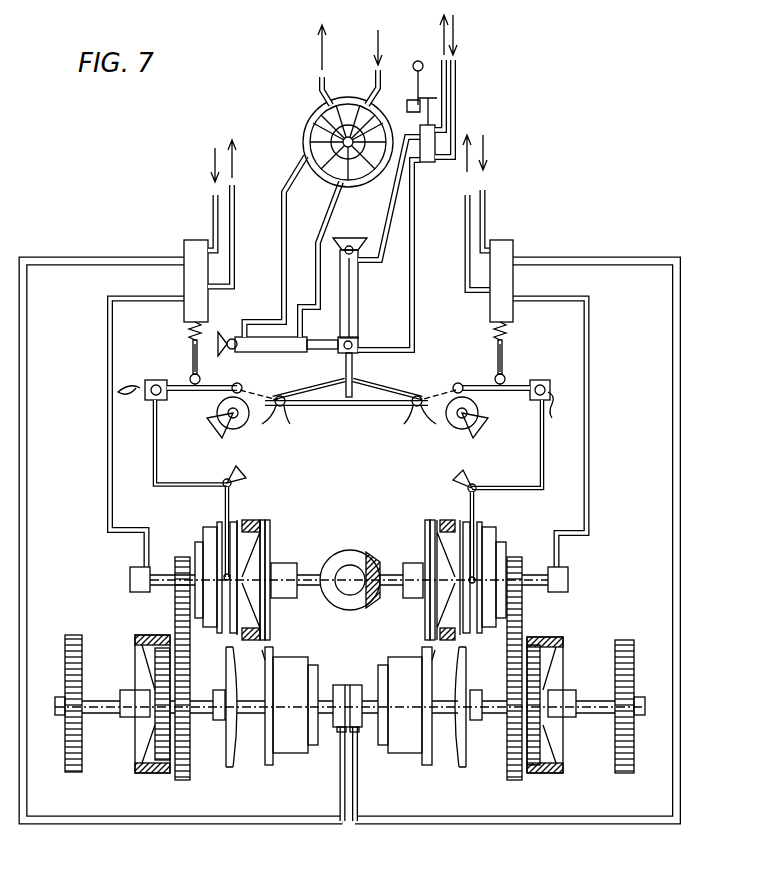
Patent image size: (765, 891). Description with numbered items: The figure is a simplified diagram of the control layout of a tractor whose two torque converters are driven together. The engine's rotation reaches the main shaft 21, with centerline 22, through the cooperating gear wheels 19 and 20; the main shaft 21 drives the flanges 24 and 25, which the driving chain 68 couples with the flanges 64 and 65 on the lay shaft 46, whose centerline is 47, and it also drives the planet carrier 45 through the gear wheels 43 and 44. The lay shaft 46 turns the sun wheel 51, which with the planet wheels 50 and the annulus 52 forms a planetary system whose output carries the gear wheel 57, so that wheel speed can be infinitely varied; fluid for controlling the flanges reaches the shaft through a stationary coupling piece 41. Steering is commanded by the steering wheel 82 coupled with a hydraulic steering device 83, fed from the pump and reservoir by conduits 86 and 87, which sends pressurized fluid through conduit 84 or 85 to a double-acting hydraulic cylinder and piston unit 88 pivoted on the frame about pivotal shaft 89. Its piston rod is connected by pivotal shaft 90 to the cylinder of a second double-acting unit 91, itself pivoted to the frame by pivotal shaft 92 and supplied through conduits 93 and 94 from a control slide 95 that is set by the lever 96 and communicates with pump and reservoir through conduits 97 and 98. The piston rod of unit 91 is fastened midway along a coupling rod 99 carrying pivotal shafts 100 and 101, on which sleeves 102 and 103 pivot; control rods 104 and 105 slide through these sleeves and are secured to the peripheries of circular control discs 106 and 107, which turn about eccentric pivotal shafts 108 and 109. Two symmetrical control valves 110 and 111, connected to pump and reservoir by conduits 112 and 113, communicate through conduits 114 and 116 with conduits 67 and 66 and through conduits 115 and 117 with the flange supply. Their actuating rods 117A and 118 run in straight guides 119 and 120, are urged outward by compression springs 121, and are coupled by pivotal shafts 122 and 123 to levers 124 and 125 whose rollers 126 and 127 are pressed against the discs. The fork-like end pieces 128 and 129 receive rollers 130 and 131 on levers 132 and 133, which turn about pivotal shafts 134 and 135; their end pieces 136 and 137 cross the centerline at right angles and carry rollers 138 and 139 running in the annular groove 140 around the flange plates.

The gear wheel 19 is at (352, 552).
The gear wheel 20 is at (374, 610).
The main shaft 21 is at (321, 595).
The centerline 22 is at (310, 576).
The flange 24 is at (268, 529).
The flange 25 is at (197, 534).
The coupling piece 41 is at (130, 580).
The gear wheel 43 is at (180, 560).
The gear wheel 44 is at (356, 675).
The planet carrier 45 is at (180, 780).
The lay shaft 46 is at (206, 715).
The centerline 47 is at (352, 700).
The planet wheels 50 is at (155, 666).
The sun wheel 51 is at (150, 738).
The annulus 52 is at (135, 640).
The gear wheel 57 is at (73, 635).
The flange 64 is at (232, 778).
The flange 65 is at (266, 762).
The conduit 66 is at (359, 797).
The conduit 67 is at (339, 797).
The driving chain 68 is at (275, 646).
The steering wheel 82 is at (332, 142).
The hydraulic steering device 83 is at (331, 141).
The conduit 84 is at (290, 178).
The conduit 85 is at (322, 190).
The conduit 86 is at (376, 78).
The conduit 87 is at (320, 78).
The double-acting hydraulic cylinder and piston unit 88 is at (268, 337).
The pivotal shaft 89 is at (232, 338).
The pivotal shaft 90 is at (352, 343).
The double-acting hydraulic cylinder and piston unit 91 is at (358, 300).
The pivotal shaft 92 is at (349, 236).
The conduit 93 is at (390, 200).
The conduit 94 is at (414, 236).
The control slide 95 is at (428, 163).
The lever 96 is at (416, 61).
The conduit 97 is at (448, 72).
The conduit 98 is at (457, 100).
The coupling rod 99 is at (345, 408).
The pivotal shaft 100 is at (286, 408).
The pivotal shaft 101 is at (413, 408).
The sleeve 102 is at (291, 428).
The sleeve 103 is at (410, 428).
The control rod 104 is at (322, 385).
The control rod 105 is at (378, 385).
The control disc 106 is at (270, 428).
The control disc 107 is at (440, 430).
The pivotal shaft 108 is at (236, 428).
The pivotal shaft 109 is at (457, 430).
The control valve 110 is at (184, 248).
The control valve 111 is at (513, 252).
The conduit 112 is at (212, 207).
The conduit 113 is at (234, 225).
The conduit 114 is at (25, 372).
The conduit 115 is at (107, 378).
The conduit 116 is at (673, 322).
The conduit 117 is at (589, 352).
The actuating rod 117A is at (190, 348).
The actuating rod 118 is at (505, 346).
The straight guide 119 is at (190, 360).
The straight guide 120 is at (505, 362).
The compression spring 121 is at (188, 330).
The pivotal shaft 122 is at (200, 380).
The pivotal shaft 123 is at (497, 360).
The lever 124 is at (180, 393).
The lever 125 is at (500, 393).
The roller 126 is at (242, 386).
The roller 127 is at (458, 383).
The fork-like end piece 128 is at (118, 392).
The fork-like end piece 129 is at (552, 386).
The roller 130 is at (143, 396).
The roller 131 is at (556, 418).
The lever 132 is at (152, 468).
The lever 133 is at (545, 470).
The pivotal shaft 134 is at (223, 487).
The pivotal shaft 135 is at (478, 480).
The end piece 136 is at (240, 478).
The end piece 137 is at (468, 491).
The roller 138 is at (243, 577).
The roller 139 is at (473, 578).
The annular groove 140 is at (230, 633).